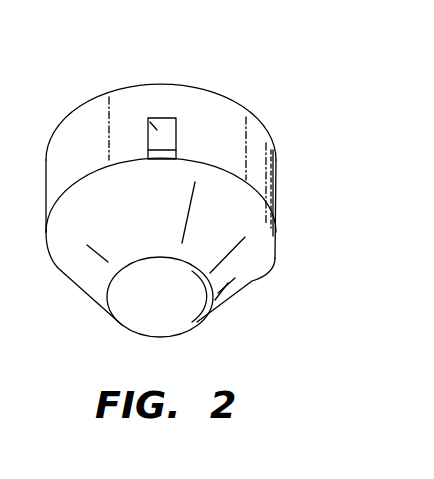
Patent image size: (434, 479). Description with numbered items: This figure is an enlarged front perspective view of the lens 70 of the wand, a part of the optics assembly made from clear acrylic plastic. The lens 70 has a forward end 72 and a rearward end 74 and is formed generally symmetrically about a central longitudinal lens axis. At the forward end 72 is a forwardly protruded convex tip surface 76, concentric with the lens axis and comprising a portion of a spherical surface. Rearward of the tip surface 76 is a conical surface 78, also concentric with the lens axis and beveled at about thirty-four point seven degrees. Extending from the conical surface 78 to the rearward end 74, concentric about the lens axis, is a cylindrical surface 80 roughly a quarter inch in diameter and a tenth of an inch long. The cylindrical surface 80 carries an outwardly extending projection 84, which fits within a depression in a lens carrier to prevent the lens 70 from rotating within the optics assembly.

The lens 70 is at (214, 200).
The forward end 72 is at (206, 341).
The rearward end 74 is at (263, 130).
The tip surface 76 is at (143, 318).
The conical surface 78 is at (245, 280).
The cylindrical surface 80 is at (275, 178).
The projection 84 is at (148, 118).